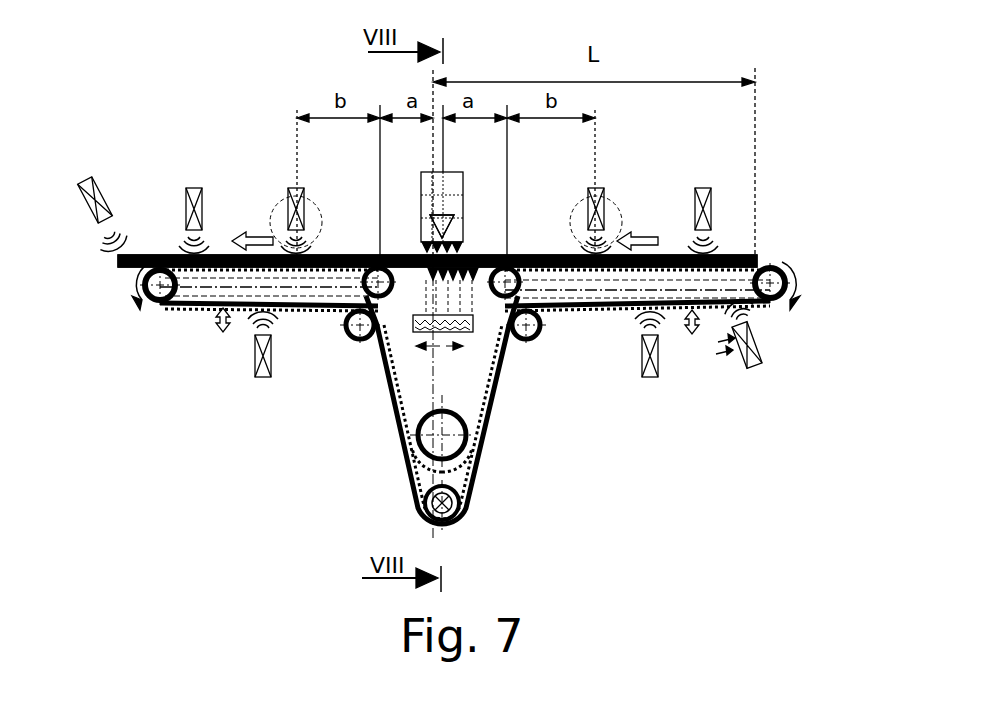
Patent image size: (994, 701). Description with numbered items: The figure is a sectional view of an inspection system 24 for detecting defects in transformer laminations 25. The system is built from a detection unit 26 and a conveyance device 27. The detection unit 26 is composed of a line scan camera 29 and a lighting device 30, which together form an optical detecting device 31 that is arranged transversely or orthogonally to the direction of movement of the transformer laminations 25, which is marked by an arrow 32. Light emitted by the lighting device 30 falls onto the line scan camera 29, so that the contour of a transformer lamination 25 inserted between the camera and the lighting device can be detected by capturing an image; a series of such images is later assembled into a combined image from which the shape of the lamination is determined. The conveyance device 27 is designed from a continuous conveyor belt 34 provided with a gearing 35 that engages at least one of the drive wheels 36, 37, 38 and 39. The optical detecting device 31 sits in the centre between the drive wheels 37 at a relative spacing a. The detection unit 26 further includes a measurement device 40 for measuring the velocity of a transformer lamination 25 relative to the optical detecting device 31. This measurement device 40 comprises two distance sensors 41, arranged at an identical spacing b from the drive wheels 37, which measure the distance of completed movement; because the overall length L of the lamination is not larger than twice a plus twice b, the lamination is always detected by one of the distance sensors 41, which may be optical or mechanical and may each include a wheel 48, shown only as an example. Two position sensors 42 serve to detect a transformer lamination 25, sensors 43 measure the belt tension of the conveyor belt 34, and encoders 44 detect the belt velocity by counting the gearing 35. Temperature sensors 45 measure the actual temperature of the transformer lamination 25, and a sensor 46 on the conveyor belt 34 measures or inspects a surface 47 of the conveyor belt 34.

The inspection system 24 is at (128, 78).
The transformer lamination 25 is at (165, 255).
The detection unit 26 is at (455, 172).
The conveyance device 27 is at (368, 445).
The line scan camera 29 is at (463, 190).
The lighting device 30 is at (500, 390).
The optical detecting device 31 is at (414, 195).
The arrow 32 is at (252, 236).
The conveyor belt 34 is at (560, 310).
The gearing 35 is at (622, 305).
The drive wheel 36 is at (155, 302).
The drive wheel 37 is at (380, 266).
The drive wheel 38 is at (357, 343).
The drive wheel 39 is at (480, 460).
The measurement device 40 is at (684, 140).
The distance sensor 41 is at (290, 185).
The position sensor 42 is at (190, 185).
The sensor 43 is at (263, 380).
The encoder 44 is at (218, 312).
The temperature sensor 45 is at (82, 178).
The sensor 46 is at (747, 370).
The surface 47 is at (758, 320).
The wheel 48 is at (600, 215).